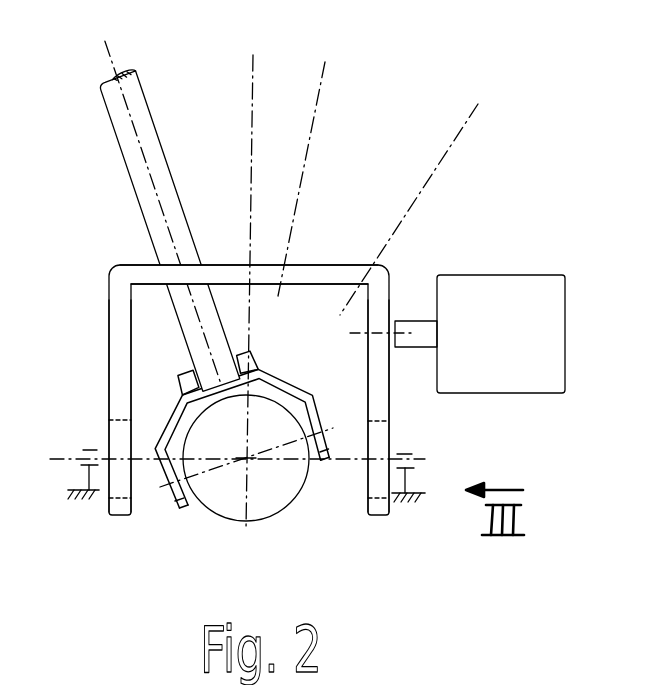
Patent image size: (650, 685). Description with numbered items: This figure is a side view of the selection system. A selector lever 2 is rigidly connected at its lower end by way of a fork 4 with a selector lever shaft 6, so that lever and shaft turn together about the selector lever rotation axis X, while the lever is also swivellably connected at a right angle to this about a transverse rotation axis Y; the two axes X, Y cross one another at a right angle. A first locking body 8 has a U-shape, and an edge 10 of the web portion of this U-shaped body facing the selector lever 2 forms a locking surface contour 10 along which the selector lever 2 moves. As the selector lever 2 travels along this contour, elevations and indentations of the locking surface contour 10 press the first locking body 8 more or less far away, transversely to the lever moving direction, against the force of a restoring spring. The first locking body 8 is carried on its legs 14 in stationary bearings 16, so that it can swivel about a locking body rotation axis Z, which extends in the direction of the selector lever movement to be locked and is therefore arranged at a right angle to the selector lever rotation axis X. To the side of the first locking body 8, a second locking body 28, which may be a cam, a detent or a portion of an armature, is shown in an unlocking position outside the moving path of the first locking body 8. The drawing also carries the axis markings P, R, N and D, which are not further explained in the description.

The selector lever 2 is at (135, 152).
The fork 4 is at (160, 463).
The selector lever shaft 6 is at (230, 507).
The first locking body 8 is at (248, 330).
The locking surface contour 10 is at (337, 265).
The legs 14 is at (109, 355).
The stationary bearings 16 is at (83, 477).
The second locking body 28 is at (410, 325).
The rod axis P is at (151, 200).
The reference axis R is at (248, 272).
The axis N is at (306, 156).
The axis D is at (417, 188).
The selector lever rotation axis X is at (247, 458).
The transverse rotation axis Y is at (164, 490).
The locking body rotation axis Z is at (66, 455).